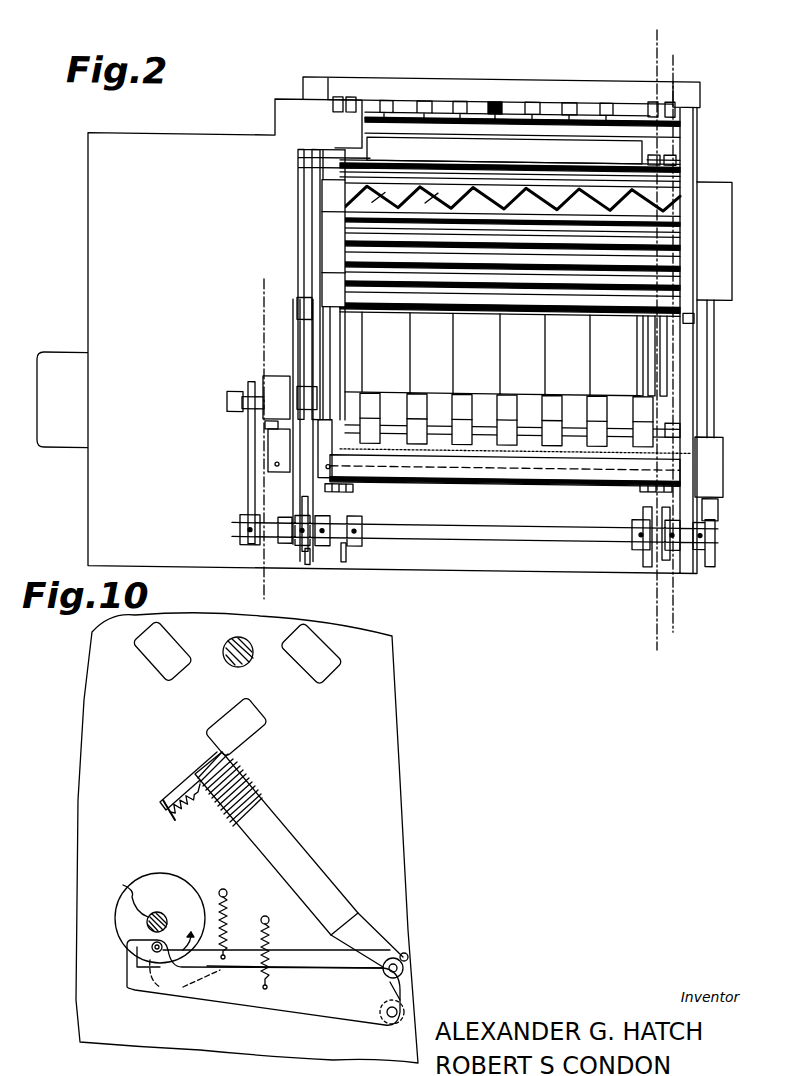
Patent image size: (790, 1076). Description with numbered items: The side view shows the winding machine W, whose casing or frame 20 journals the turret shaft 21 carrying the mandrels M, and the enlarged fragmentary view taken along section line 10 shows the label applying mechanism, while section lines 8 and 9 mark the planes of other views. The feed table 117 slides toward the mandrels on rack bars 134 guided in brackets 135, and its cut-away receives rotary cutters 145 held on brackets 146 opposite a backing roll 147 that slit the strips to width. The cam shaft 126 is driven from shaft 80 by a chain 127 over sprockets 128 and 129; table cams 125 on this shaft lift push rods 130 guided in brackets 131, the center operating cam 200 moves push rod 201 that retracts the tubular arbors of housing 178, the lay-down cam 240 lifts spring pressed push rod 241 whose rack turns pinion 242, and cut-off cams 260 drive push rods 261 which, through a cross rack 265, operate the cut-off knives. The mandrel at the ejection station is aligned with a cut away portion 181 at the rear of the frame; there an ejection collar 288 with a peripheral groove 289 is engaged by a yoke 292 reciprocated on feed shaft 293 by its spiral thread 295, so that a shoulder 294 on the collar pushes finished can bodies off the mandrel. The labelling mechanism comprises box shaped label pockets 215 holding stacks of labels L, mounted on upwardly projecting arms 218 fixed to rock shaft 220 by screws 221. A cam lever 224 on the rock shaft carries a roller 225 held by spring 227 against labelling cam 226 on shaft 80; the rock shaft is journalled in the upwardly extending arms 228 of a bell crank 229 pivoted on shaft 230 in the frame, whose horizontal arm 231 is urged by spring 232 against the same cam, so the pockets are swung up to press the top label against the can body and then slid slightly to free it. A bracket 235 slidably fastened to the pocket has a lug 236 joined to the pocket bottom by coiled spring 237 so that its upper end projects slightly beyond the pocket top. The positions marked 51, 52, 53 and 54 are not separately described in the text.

In FIG. 2, the casing or frame 20 is at (165, 136).
In FIG. 10, the casing or frame 20 is at (77, 877).
In FIG. 2, the bracket 135 is at (287, 101).
In FIG. 2, the rack bar 134 is at (338, 97).
In FIG. 2, the cross rack 265 is at (352, 97).
In FIG. 2, the rotary cutter 145 is at (462, 105).
In FIG. 2, the bracket 146 is at (528, 92).
In FIG. 2, the backing roll 147 is at (478, 120).
In FIG. 2, the feed table 117 is at (522, 148).
In FIG. 2, the roller 51 is at (670, 176).
In FIG. 2, the screw roller 54 is at (510, 209).
In FIG. 10, the screw roller 54 is at (311, 653).
In FIG. 2, the feed shaft 293 is at (369, 198).
In FIG. 2, the spiral thread 295 is at (438, 197).
In FIG. 2, the mandrel M is at (510, 238).
In FIG. 10, the mandrel M is at (302, 665).
In FIG. 2, the shoulder 294 is at (350, 277).
In FIG. 2, the roller 53 is at (510, 298).
In FIG. 10, the roller 53 is at (236, 727).
In FIG. 2, the housing 178 is at (720, 239).
In FIG. 2, the cut away portion 181 is at (694, 312).
In FIG. 2, the push rod 201 is at (714, 395).
In FIG. 2, the yoke 292 is at (304, 212).
In FIG. 2, the ejection collar 288 is at (312, 235).
In FIG. 2, the peripheral groove 289 is at (322, 256).
In FIG. 2, the push rod 130 is at (335, 347).
In FIG. 2, the push rod 261 is at (350, 353).
In FIG. 2, the label pocket 215 is at (488, 346).
In FIG. 10, the label pocket 215 is at (283, 830).
In FIG. 2, the rock shaft 220 is at (392, 417).
In FIG. 10, the rock shaft 220 is at (404, 968).
In FIG. 2, the pinion 242 is at (312, 303).
In FIG. 2, the push rod 241 is at (313, 326).
In FIG. 2, the labelling cam 226 is at (273, 377).
In FIG. 10, the labelling cam 226 is at (183, 888).
In FIG. 2, the sprocket 129 is at (238, 394).
In FIG. 2, the shaft 80 is at (232, 395).
In FIG. 10, the shaft 80 is at (123, 885).
In FIG. 2, the cam lever 224 is at (267, 427).
In FIG. 10, the cam lever 224 is at (298, 958).
In FIG. 2, the arm 231 is at (268, 449).
In FIG. 10, the arm 231 is at (243, 993).
In FIG. 2, the chain 127 is at (249, 474).
In FIG. 2, the arm 228 is at (348, 470).
In FIG. 10, the arm 228 is at (400, 990).
In FIG. 2, the bell crank 229 is at (442, 480).
In FIG. 10, the bell crank 229 is at (353, 1017).
In FIG. 2, the shaft 230 is at (500, 470).
In FIG. 10, the shaft 230 is at (392, 1020).
In FIG. 2, the bracket 131 is at (355, 494).
In FIG. 2, the cam shaft 126 is at (513, 540).
In FIG. 2, the sprocket 128 is at (241, 534).
In FIG. 2, the table cam 125 is at (333, 564).
In FIG. 2, the cut-off cam 260 is at (347, 557).
In FIG. 2, the lay-down cam 240 is at (300, 564).
In FIG. 2, the center operating cam 200 is at (714, 548).
In FIG. 2, the section line 10 is at (278, 275).
In FIG. 2, the section line 9 is at (672, 24).
In FIG. 2, the section line 8 is at (665, 48).
In FIG. 10, the winding machine W is at (80, 815).
In FIG. 10, the roller 52 is at (162, 651).
In FIG. 10, the turret shaft 21 is at (230, 666).
In FIG. 10, the label L is at (240, 773).
In FIG. 10, the bracket 235 is at (176, 787).
In FIG. 10, the lug 236 is at (160, 806).
In FIG. 10, the coiled spring 237 is at (188, 808).
In FIG. 10, the arm 218 is at (385, 945).
In FIG. 10, the screw 221 is at (409, 957).
In FIG. 10, the roller 225 is at (127, 946).
In FIG. 10, the spring 227 is at (230, 917).
In FIG. 10, the spring 232 is at (268, 935).